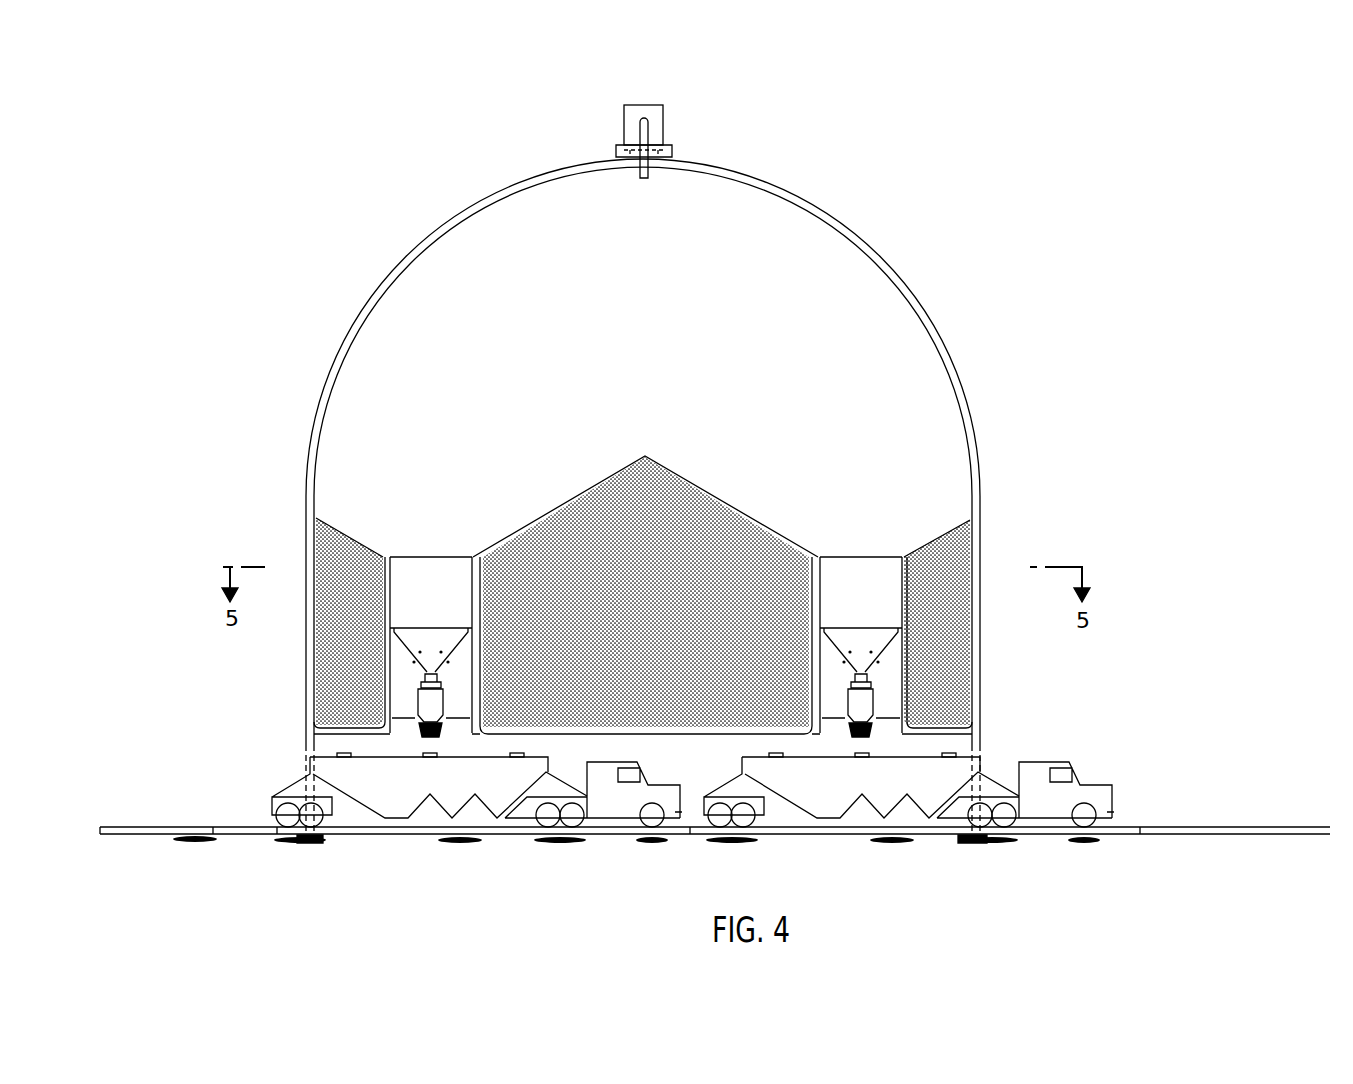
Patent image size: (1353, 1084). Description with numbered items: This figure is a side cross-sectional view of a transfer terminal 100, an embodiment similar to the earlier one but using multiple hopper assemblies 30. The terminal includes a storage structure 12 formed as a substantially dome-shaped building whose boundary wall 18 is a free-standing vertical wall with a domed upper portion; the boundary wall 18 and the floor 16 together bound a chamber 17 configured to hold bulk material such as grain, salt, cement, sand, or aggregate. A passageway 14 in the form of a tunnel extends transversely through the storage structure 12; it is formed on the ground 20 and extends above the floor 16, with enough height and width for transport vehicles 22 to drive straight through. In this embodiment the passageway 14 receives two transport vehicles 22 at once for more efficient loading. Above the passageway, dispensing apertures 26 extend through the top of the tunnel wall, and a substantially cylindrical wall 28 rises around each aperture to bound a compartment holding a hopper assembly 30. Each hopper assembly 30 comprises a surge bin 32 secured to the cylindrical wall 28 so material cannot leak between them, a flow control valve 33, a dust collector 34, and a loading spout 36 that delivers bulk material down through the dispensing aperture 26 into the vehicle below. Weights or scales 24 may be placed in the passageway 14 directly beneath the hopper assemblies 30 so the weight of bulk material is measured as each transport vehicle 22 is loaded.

The transfer terminal 100 is at (683, 470).
The storage structure 12 is at (950, 348).
The passageway 14 is at (957, 748).
The floor 16 is at (305, 733).
The chamber 17 is at (864, 293).
The boundary wall 18 is at (976, 492).
The ground 20 is at (1152, 827).
The transport vehicle 22 is at (1047, 775).
The weights or scales 24 is at (303, 750).
The dispensing aperture 26 is at (444, 726).
The cylindrical wall 28 is at (392, 652).
The hopper assembly 30 is at (658, 620).
The surge bin 32 is at (452, 572).
The flow control valve 33 is at (439, 683).
The dust collector 34 is at (421, 688).
The loading spout 36 is at (421, 712).